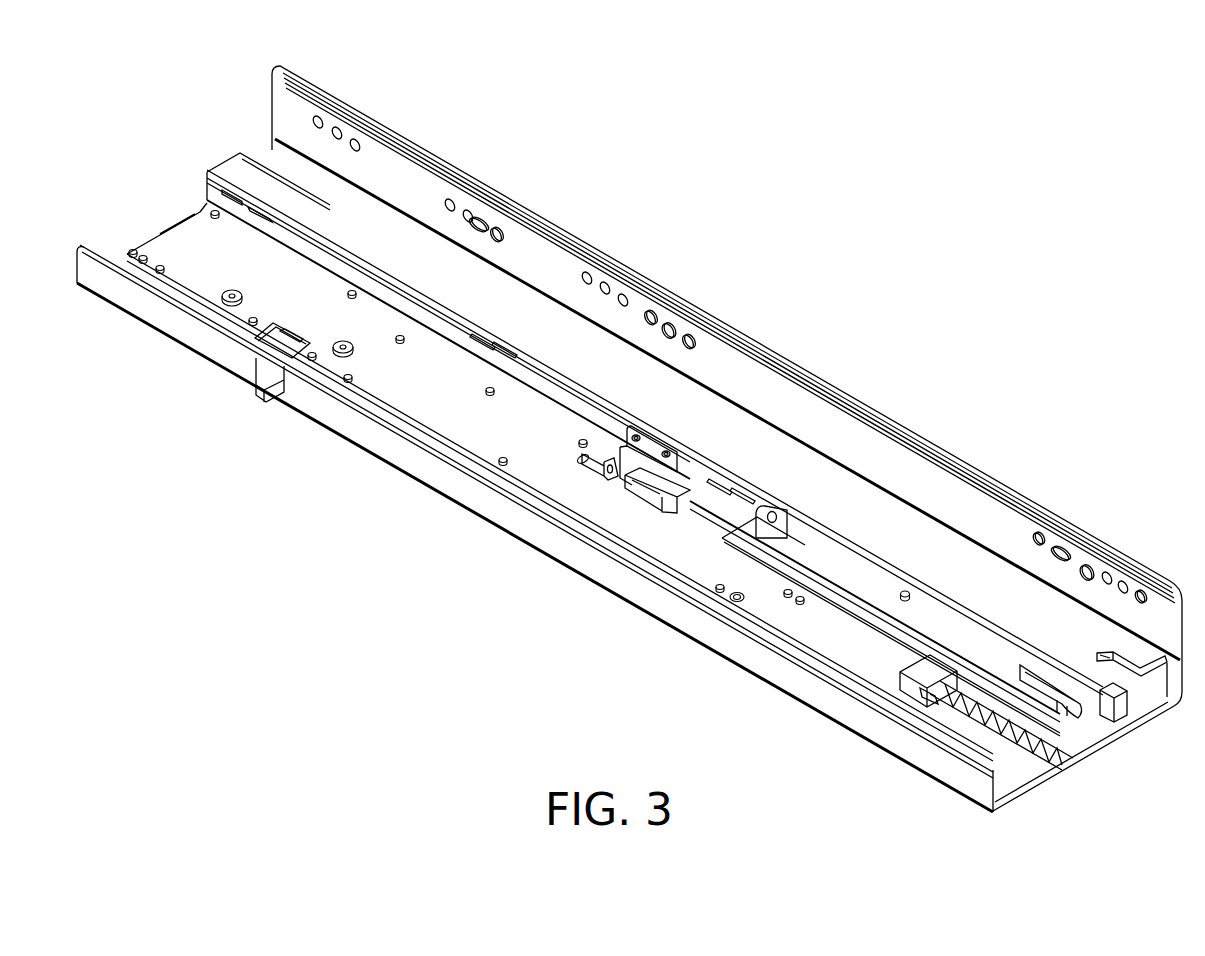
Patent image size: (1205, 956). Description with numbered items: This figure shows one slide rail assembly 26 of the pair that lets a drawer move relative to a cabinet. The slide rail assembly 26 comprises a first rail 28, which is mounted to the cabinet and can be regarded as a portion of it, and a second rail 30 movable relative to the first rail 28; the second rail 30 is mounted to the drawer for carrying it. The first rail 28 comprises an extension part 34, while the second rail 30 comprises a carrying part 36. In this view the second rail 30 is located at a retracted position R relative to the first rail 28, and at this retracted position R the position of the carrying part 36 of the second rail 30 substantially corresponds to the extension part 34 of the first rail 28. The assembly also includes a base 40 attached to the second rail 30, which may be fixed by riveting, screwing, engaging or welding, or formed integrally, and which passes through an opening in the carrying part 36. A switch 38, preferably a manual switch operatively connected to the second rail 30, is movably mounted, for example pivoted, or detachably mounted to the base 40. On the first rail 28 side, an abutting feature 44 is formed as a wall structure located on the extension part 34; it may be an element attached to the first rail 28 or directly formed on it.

The slide rail assembly 26 is at (553, 122).
The first rail 28 is at (835, 374).
The second rail 30 is at (968, 566).
The extension part 34 is at (931, 723).
The carrying part 36 is at (794, 623).
The switch 38 is at (655, 500).
The base 40 is at (647, 450).
The abutting feature 44 is at (613, 478).
The retracted position R is at (1168, 712).